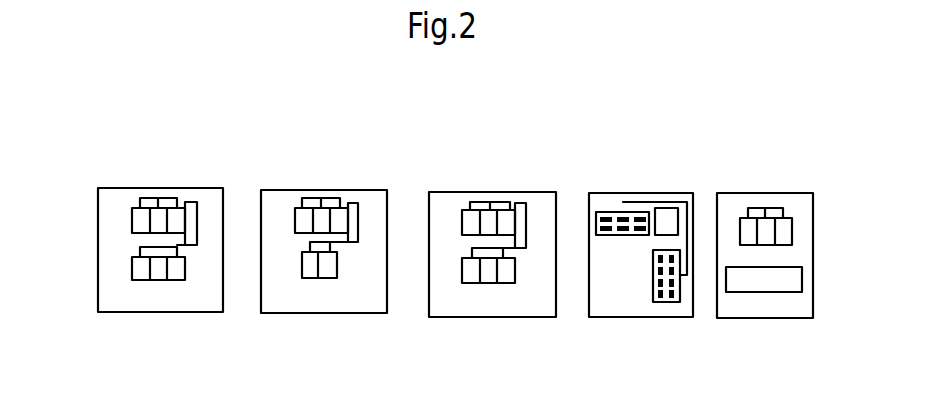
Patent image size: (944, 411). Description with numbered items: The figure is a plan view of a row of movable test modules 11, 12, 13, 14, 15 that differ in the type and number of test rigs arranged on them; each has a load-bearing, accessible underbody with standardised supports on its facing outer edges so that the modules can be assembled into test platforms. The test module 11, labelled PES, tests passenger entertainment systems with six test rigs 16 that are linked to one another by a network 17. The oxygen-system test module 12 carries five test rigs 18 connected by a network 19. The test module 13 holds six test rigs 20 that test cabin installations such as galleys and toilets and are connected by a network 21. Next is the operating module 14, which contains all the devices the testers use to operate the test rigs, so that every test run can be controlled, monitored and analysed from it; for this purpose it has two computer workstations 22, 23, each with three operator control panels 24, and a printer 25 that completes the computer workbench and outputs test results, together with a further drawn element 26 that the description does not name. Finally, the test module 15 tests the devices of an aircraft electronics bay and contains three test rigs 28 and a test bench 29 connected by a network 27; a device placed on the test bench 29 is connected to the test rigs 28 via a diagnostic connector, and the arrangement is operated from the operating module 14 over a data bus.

The test module 11 is at (123, 188).
The test module 12 is at (298, 190).
The test module 13 is at (462, 190).
The operating module 14 is at (613, 193).
The test module 15 is at (730, 193).
The test rigs 16 is at (132, 217).
The network 17 is at (188, 197).
The test rigs 18 is at (295, 220).
The network 19 is at (346, 196).
The test rigs 20 is at (462, 223).
The network 21 is at (513, 196).
The computer workstation 22 is at (596, 222).
The computer workstation 23 is at (680, 287).
The operator control panels 24 is at (622, 235).
The printer 25 is at (657, 210).
The connecting bracket 26 is at (680, 202).
The network 27 is at (777, 208).
The test rigs 28 is at (792, 228).
The test bench 29 is at (772, 292).